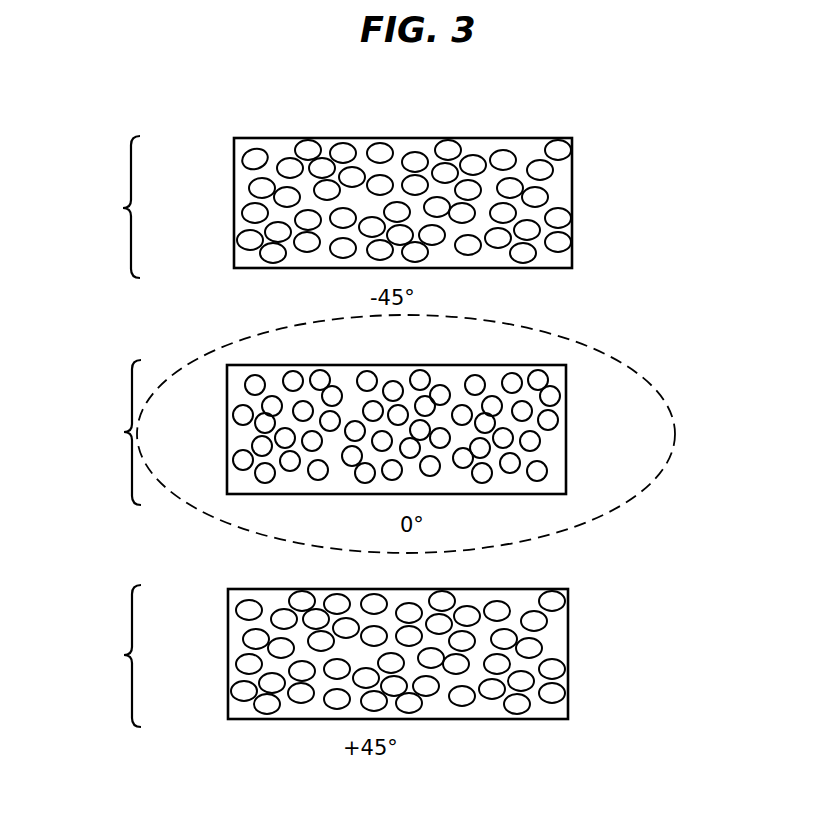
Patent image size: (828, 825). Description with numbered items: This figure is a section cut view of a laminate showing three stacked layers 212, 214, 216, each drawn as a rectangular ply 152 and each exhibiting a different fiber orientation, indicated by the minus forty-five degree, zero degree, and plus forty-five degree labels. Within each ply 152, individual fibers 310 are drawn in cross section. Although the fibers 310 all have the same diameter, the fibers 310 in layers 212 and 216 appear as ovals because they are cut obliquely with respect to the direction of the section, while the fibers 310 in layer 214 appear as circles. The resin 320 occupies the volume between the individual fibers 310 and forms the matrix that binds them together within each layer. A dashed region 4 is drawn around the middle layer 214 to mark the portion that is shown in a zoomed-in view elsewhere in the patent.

The region 4 is at (406, 434).
The ply 152 is at (573, 197).
The layer 212 is at (103, 207).
The layer 214 is at (104, 432).
The layer 216 is at (104, 656).
The fibers 310 is at (250, 252).
The resin 320 is at (312, 258).